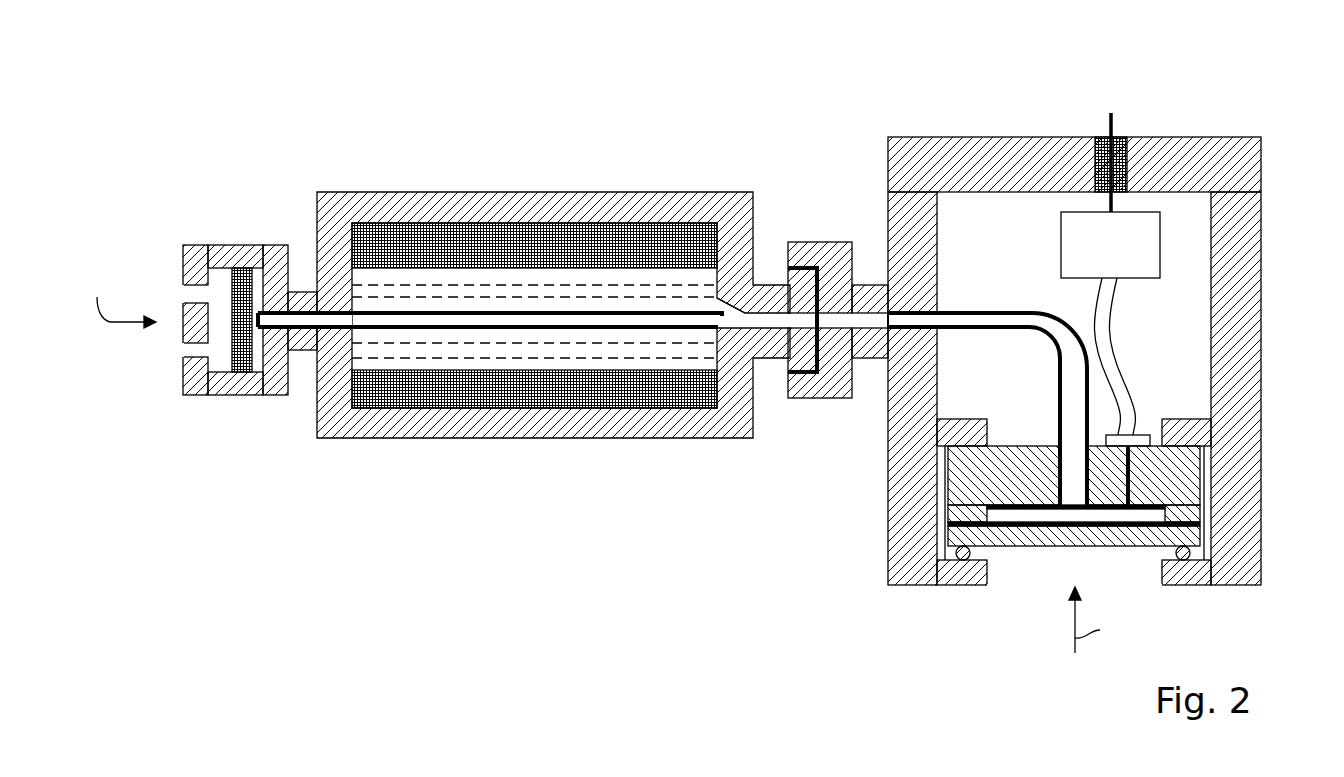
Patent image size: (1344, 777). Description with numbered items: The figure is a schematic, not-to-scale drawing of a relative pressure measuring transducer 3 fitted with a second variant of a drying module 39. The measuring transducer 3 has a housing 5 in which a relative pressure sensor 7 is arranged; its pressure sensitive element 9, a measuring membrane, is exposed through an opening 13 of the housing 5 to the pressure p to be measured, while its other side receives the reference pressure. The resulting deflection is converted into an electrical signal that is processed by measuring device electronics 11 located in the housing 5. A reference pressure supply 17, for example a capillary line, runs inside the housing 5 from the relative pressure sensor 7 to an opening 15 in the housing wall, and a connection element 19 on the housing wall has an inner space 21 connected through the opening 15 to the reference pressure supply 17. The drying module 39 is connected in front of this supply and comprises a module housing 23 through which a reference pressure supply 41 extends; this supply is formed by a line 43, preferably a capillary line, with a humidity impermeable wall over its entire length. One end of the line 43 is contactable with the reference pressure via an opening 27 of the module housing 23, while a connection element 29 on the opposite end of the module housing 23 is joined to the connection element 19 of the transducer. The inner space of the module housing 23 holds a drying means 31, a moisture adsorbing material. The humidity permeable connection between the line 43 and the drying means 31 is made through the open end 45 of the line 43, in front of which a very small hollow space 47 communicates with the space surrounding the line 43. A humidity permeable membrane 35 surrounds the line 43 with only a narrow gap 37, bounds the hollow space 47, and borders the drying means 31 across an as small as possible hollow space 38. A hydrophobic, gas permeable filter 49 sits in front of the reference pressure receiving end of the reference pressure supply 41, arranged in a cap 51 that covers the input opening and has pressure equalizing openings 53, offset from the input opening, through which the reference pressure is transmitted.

The relative pressure measuring transducer 3 is at (962, 98).
The housing 5 is at (1261, 290).
The relative pressure sensor 7 is at (1024, 420).
The pressure sensitive element 9 is at (1013, 547).
The measuring device electronics 11 is at (1110, 274).
The opening 13 is at (1074, 574).
The opening 15 is at (913, 303).
The reference pressure supply 17 is at (1001, 311).
The connection element 19 is at (808, 399).
The inner space 21 is at (870, 359).
The module housing 23 is at (522, 205).
The opening 27 is at (305, 332).
The connection element 29 is at (796, 280).
The drying means 31 is at (634, 250).
The membrane 35 is at (397, 345).
The gap 37 is at (480, 334).
The hollow space 38 is at (426, 275).
The drying module 39 is at (332, 115).
The reference pressure supply 41 is at (541, 319).
The line 43 is at (628, 334).
The open end 45 is at (715, 322).
The hollow space 47 is at (742, 332).
The filter 49 is at (236, 300).
The cap 51 is at (230, 388).
The pressure equalizing opening 53 is at (188, 292).